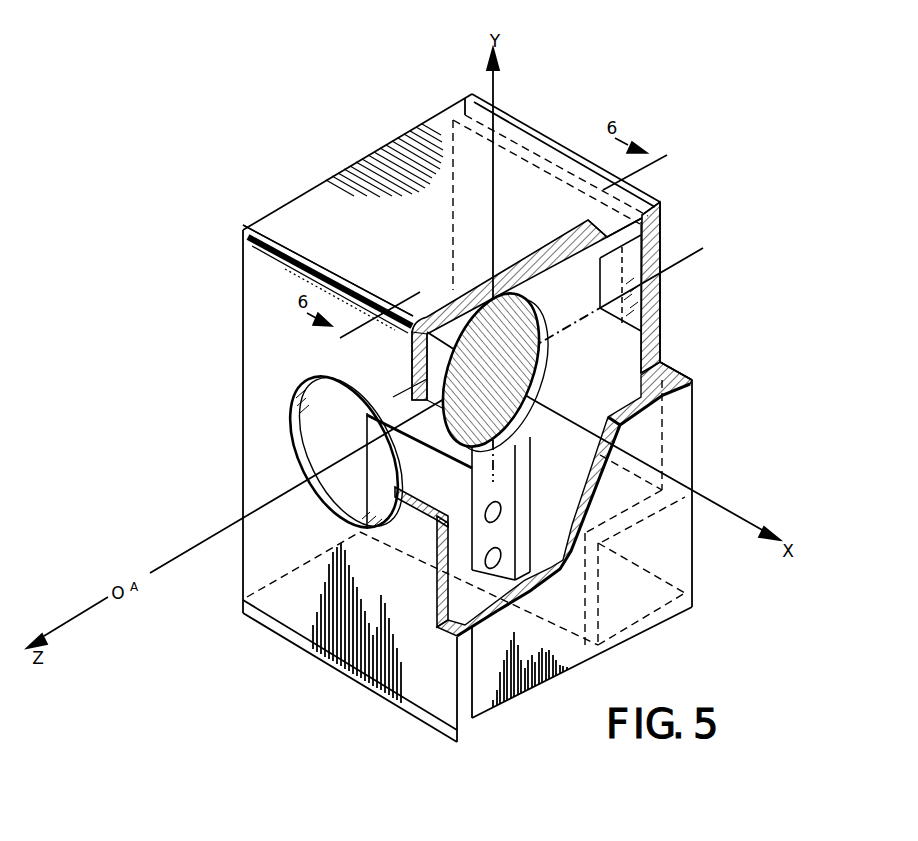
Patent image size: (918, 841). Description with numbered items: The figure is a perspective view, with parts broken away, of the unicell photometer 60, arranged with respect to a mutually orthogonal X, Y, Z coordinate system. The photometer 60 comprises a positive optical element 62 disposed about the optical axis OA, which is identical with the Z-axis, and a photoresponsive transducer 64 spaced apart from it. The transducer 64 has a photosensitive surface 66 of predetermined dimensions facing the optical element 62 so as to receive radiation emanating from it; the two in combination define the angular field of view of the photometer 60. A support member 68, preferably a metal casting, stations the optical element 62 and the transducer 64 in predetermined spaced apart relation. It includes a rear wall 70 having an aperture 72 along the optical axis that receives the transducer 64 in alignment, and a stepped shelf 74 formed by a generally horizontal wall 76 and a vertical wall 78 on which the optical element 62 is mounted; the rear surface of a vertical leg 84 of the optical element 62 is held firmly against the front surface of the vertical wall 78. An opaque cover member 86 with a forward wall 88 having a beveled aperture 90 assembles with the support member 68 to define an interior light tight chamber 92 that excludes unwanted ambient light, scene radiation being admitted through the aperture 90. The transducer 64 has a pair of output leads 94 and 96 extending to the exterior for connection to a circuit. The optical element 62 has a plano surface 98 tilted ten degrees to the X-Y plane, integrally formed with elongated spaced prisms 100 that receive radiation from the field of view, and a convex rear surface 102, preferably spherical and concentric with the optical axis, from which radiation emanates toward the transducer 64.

The unicell photometer 60 is at (548, 104).
The positive optical element 62 is at (527, 284).
The photoresponsive transducer 64 is at (672, 318).
The photosensitive surface 66 is at (645, 306).
The support member 68 is at (700, 354).
The rear wall 70 is at (650, 236).
The aperture 72 is at (623, 328).
The stepped shelf 74 is at (557, 503).
The horizontal wall 76 is at (662, 505).
The vertical wall 78 is at (586, 574).
The vertical leg 84 is at (523, 452).
The opaque cover member 86 is at (224, 224).
The forward wall 88 is at (424, 360).
The beveled aperture 90 is at (310, 433).
The light tight chamber 92 is at (586, 254).
The output lead 94 is at (664, 292).
The output lead 96 is at (662, 258).
The plano surface 98 is at (546, 378).
The elongated spaced prisms 100 is at (546, 315).
The convex rear surface 102 is at (548, 369).